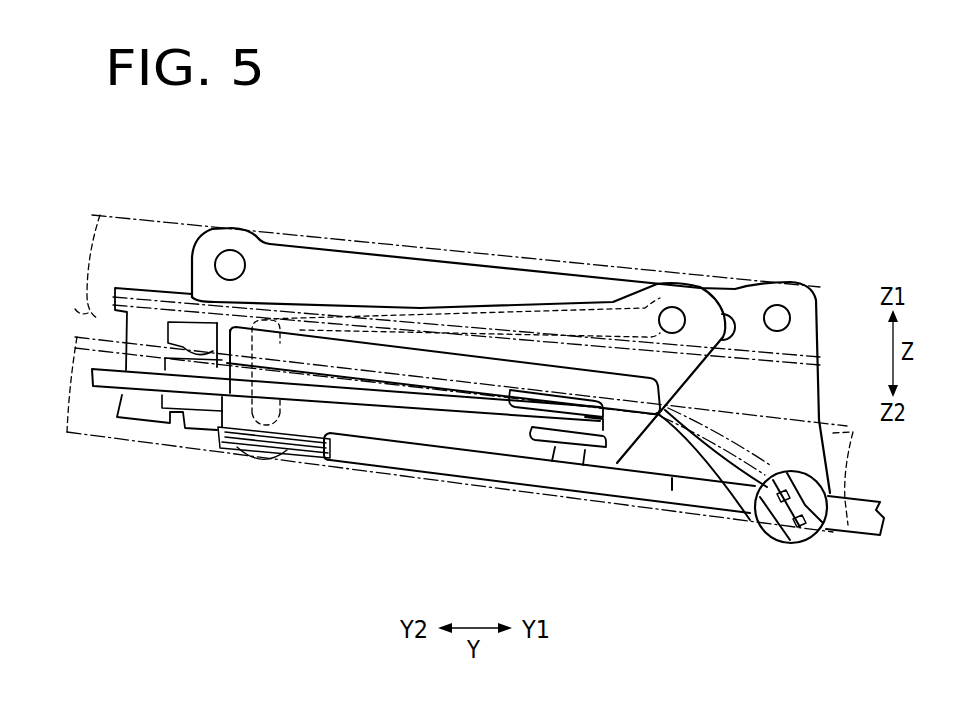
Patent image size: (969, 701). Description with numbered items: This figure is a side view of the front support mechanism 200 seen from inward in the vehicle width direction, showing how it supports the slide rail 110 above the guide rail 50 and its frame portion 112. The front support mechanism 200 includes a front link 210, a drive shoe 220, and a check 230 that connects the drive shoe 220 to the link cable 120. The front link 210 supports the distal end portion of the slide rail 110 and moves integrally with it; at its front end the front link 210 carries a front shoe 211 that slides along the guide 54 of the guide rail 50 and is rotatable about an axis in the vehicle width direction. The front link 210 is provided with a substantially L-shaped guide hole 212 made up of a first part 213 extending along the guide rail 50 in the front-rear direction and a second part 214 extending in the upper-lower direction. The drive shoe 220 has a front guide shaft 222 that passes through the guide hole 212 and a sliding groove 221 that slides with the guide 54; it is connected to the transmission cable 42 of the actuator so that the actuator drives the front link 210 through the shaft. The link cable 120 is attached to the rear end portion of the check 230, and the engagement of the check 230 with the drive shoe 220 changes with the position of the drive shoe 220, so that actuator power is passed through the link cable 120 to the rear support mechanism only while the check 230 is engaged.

The slide rail 110 is at (101, 214).
The frame portion 112 is at (75, 309).
The guide rail 50 is at (80, 445).
The front support mechanism 200 is at (298, 198).
The front link 210 is at (197, 253).
The guide hole 212 is at (590, 315).
The first part 213 is at (486, 278).
The front guide shaft 222 is at (688, 318).
The sliding groove 221 is at (208, 352).
The link cable 120 is at (363, 405).
The second part 214 is at (266, 425).
The drive shoe 220 is at (648, 452).
The transmission cable 42 is at (868, 500).
The check 230 is at (556, 448).
The front shoe 211 is at (806, 535).
The guide 54 is at (723, 440).